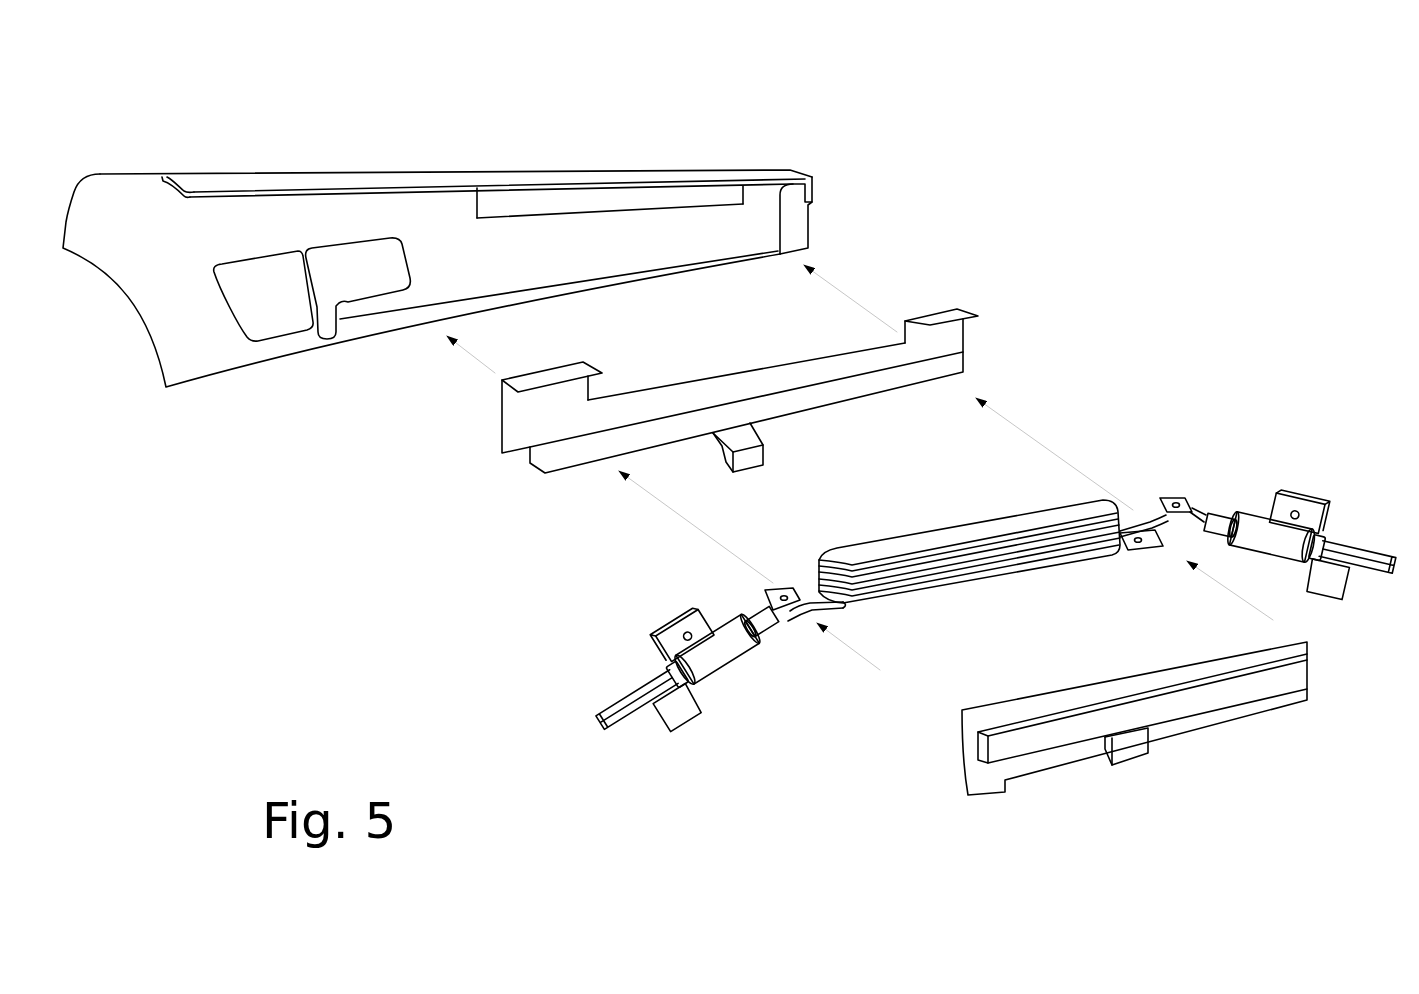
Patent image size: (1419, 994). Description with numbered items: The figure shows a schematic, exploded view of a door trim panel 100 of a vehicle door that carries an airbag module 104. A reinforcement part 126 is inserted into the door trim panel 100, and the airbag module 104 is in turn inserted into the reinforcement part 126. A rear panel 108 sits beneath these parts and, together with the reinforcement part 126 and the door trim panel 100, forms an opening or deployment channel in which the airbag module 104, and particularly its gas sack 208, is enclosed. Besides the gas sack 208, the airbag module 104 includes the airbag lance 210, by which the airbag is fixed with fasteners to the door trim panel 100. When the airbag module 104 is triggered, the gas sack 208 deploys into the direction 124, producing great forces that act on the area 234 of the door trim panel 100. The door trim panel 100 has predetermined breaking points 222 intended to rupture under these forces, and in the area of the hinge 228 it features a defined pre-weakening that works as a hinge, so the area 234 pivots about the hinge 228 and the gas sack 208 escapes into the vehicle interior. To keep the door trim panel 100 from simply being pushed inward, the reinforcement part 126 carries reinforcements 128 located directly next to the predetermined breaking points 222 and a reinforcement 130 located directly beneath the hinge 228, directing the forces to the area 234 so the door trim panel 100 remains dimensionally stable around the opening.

The door trim panel 100 is at (832, 222).
The airbag module 104 is at (1031, 594).
The rear panel 108 is at (1199, 749).
The direction 124 is at (958, 458).
The reinforcement part 126 is at (982, 355).
The reinforcements 128 is at (558, 365).
The reinforcement 130 is at (747, 370).
The gas sack 208 is at (920, 578).
The airbag lance 210 is at (773, 618).
The predetermined breaking points 222 is at (475, 208).
The hinge 228 is at (620, 212).
The area 234 is at (322, 182).